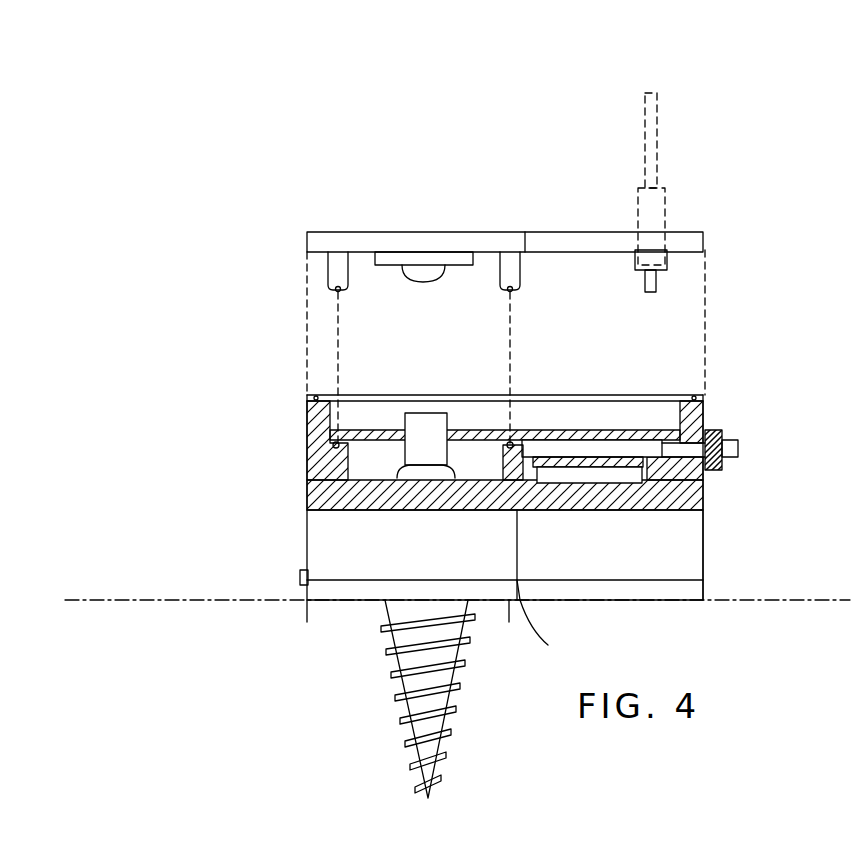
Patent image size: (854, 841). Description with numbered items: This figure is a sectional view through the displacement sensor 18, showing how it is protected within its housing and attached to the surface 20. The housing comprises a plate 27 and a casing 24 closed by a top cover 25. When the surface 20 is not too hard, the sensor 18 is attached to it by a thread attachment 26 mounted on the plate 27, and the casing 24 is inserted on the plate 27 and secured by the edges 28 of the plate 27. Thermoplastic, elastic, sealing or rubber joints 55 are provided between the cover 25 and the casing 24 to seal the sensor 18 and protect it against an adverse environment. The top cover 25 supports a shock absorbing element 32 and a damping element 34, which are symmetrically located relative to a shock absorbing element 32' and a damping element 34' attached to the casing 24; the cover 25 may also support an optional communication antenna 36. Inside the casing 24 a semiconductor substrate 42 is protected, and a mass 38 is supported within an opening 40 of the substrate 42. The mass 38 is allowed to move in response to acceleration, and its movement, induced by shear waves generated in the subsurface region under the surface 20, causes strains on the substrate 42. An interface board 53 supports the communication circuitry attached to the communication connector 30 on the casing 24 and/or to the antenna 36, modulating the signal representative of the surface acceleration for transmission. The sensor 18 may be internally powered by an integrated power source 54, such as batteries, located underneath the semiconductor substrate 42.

The displacement sensor 18 is at (203, 82).
The communication antenna 36 is at (675, 73).
The top cover 25 is at (337, 233).
The shock absorbing element 32 is at (425, 212).
The mass 38 is at (428, 425).
The damping element 34 is at (339, 291).
The casing 24 is at (585, 395).
The rubber joints 55 is at (307, 386).
The semiconductor substrate 42 is at (618, 438).
The communication connector 30 is at (723, 452).
The interface board 53 is at (587, 470).
The surface 20 is at (163, 600).
The damping element 34' is at (450, 502).
The shock absorbing element 32' is at (329, 524).
The edges 28 is at (300, 577).
The plate 27 is at (307, 624).
The integrated power source 54 is at (390, 557).
The opening 40 is at (550, 622).
The thread attachment 26 is at (422, 722).